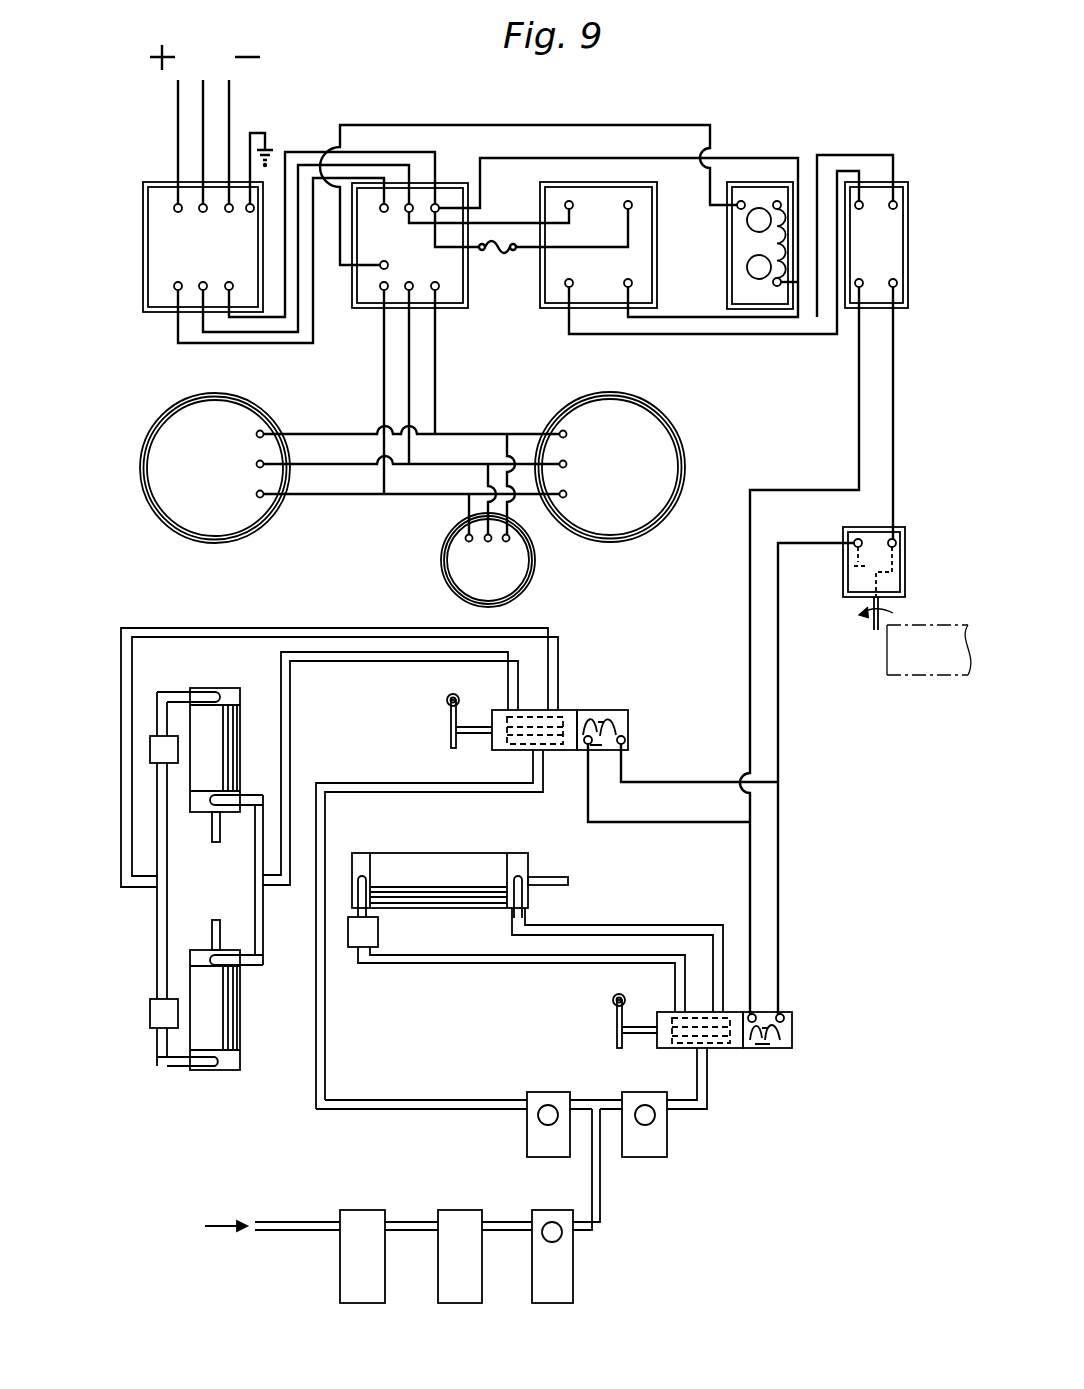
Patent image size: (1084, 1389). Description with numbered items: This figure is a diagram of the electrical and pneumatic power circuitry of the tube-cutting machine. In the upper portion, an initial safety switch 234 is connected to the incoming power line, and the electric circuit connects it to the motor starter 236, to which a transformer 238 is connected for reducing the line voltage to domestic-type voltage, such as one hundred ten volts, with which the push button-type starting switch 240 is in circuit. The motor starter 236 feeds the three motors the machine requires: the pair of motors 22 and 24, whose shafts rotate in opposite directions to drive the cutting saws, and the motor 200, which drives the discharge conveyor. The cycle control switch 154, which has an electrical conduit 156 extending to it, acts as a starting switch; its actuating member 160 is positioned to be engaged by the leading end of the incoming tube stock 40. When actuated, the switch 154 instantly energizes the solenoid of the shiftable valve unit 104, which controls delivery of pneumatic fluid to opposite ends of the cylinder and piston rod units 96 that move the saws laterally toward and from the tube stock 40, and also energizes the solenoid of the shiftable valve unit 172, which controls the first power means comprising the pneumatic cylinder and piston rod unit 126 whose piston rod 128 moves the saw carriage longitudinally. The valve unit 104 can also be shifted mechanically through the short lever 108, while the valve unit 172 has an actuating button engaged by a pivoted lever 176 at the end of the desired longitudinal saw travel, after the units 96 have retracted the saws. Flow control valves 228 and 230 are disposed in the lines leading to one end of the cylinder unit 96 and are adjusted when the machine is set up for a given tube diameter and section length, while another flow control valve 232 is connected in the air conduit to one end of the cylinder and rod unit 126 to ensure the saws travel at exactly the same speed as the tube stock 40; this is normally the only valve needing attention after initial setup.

The motor 22 is at (160, 422).
The motor 24 is at (685, 440).
The tube stock 40 is at (950, 675).
The cylinder and piston rod unit 96 is at (240, 748).
The solenoid operated shiftable valve unit 104 is at (573, 710).
The lever 108 is at (451, 725).
The pneumatic cylinder and piston rod unit 126 is at (425, 858).
The piston rod 128 is at (553, 874).
The cycle control switch 154 is at (843, 570).
The electrical conduit 156 is at (856, 392).
The actuating member 160 is at (870, 622).
The solenoid-operated shiftable valve unit 172 is at (735, 1047).
The pivoted lever 176 is at (616, 1007).
The motor 200 is at (445, 565).
The flow control valve 228 is at (150, 745).
The flow control valve 230 is at (150, 1010).
The flow control valve 232 is at (895, 240).
The safety switch 234 is at (165, 238).
The motor starter 236 is at (378, 312).
The transformer 238 is at (553, 308).
The push button-type starting switch 240 is at (737, 247).